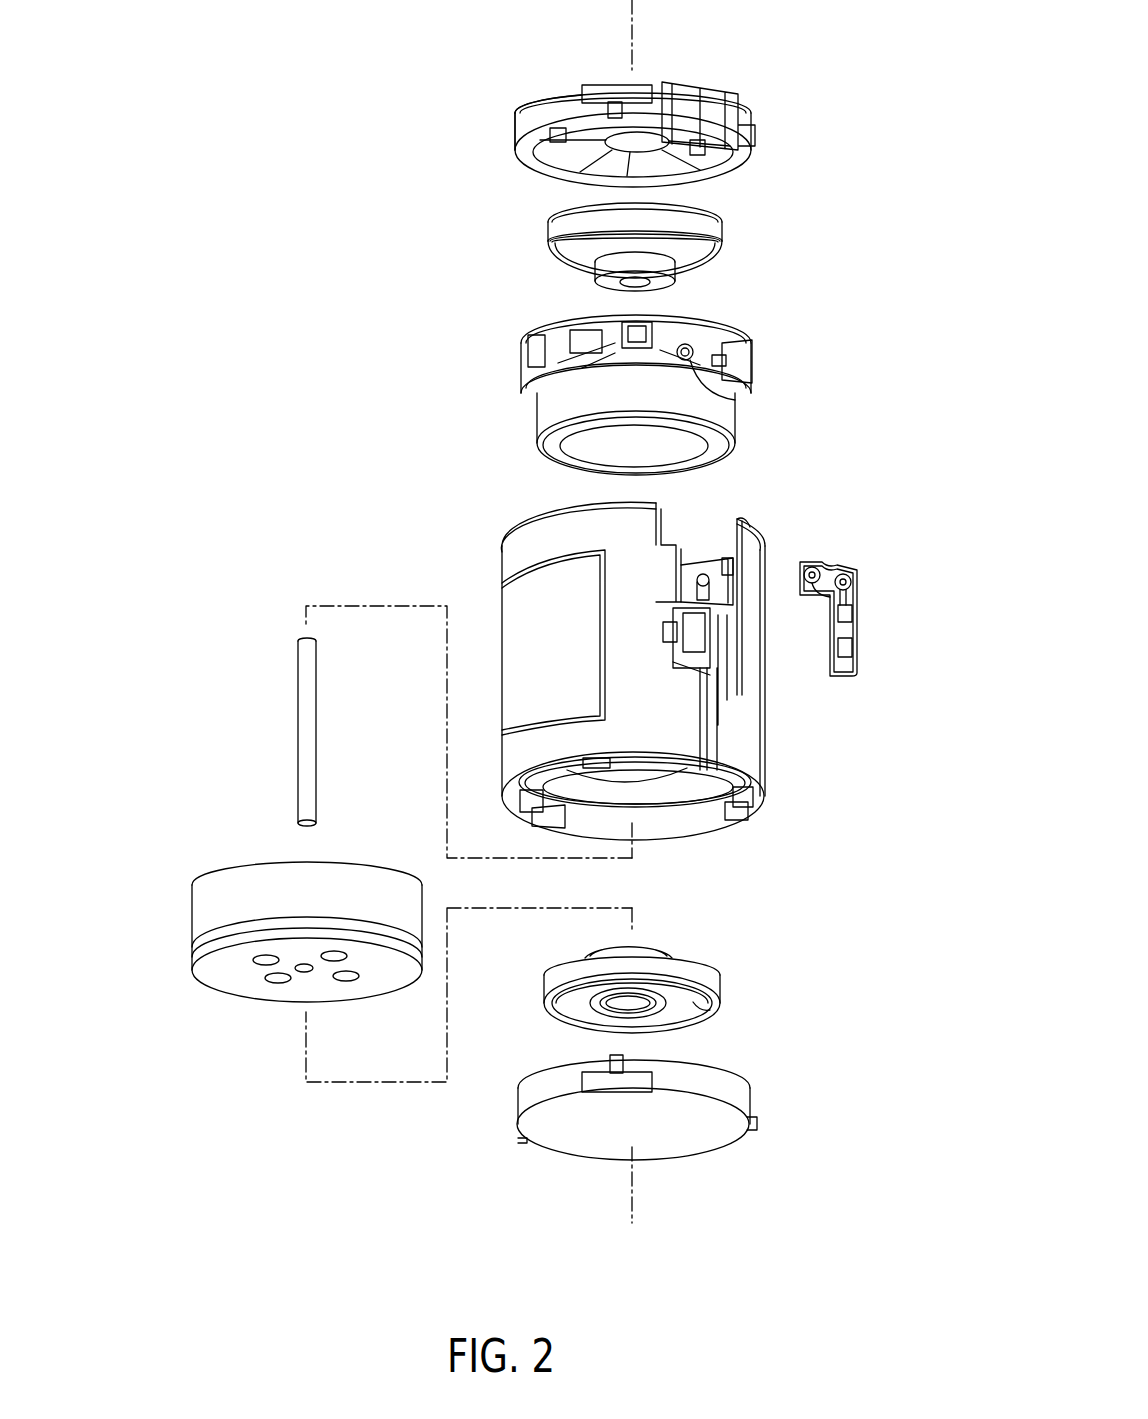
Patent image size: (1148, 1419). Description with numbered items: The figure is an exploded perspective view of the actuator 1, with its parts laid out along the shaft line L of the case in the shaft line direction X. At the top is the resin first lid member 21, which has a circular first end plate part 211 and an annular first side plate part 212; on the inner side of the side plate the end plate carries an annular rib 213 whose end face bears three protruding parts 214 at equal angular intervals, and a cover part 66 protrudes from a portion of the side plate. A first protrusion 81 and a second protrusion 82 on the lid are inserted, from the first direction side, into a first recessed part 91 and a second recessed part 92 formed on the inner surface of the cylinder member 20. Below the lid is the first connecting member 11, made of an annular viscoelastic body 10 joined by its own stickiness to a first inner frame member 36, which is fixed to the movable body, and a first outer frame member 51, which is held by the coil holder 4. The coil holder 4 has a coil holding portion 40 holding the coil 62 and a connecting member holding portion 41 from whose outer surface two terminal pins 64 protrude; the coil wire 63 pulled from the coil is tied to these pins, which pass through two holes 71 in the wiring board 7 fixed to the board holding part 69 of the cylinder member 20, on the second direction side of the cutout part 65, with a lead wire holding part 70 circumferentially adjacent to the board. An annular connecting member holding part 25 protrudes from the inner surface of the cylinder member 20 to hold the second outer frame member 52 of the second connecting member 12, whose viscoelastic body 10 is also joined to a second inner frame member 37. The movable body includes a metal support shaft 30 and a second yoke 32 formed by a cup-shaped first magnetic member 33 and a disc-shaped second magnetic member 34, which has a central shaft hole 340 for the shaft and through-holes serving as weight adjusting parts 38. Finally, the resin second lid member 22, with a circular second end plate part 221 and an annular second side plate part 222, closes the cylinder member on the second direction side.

The actuator 1 is at (285, 130).
The shaft line L is at (640, 22).
The shaft line direction X is at (697, 1240).
The first lid member 21 is at (640, 125).
The first end plate part 211 is at (582, 88).
The first side plate part 212 is at (520, 120).
The rib 213 is at (600, 170).
The protruding parts 214 is at (548, 148).
The first protrusion 81 is at (633, 90).
The second protrusion 82 is at (617, 108).
The cover part 66 is at (755, 110).
The first connecting member 11 is at (656, 236).
The first outer frame member 51 is at (710, 238).
The viscoelastic body 10 is at (690, 266).
The first inner frame member 36 is at (592, 283).
The coil holder 4 is at (637, 399).
The connecting member holding portion 41 is at (517, 376).
The coil 62 is at (545, 415).
The coil holding portion 40 is at (575, 465).
The terminal pins 64 is at (705, 345).
The coil wire 63 is at (722, 392).
The cylinder member 20 is at (676, 679).
The connecting member holding part 25 is at (687, 780).
The first recessed part 91 is at (720, 560).
The second recessed part 92 is at (540, 790).
The cutout part 65 is at (735, 518).
The board holding part 69 is at (740, 630).
The lead wire holding part 70 is at (685, 665).
The wiring board 7 is at (851, 590).
The holes 71 is at (843, 574).
The support shaft 30 is at (298, 700).
The second yoke 32 is at (261, 977).
The first magnetic member 33 is at (195, 905).
The second magnetic member 34 is at (215, 965).
The weight adjusting part 38 is at (278, 983).
The shaft hole 340 is at (304, 972).
The second connecting member 12 is at (694, 955).
The second inner frame member 37 is at (645, 945).
The second outer frame member 52 is at (700, 975).
The second lid member 22 is at (642, 1123).
The second end plate part 221 is at (593, 1152).
The second side plate part 222 is at (528, 1095).